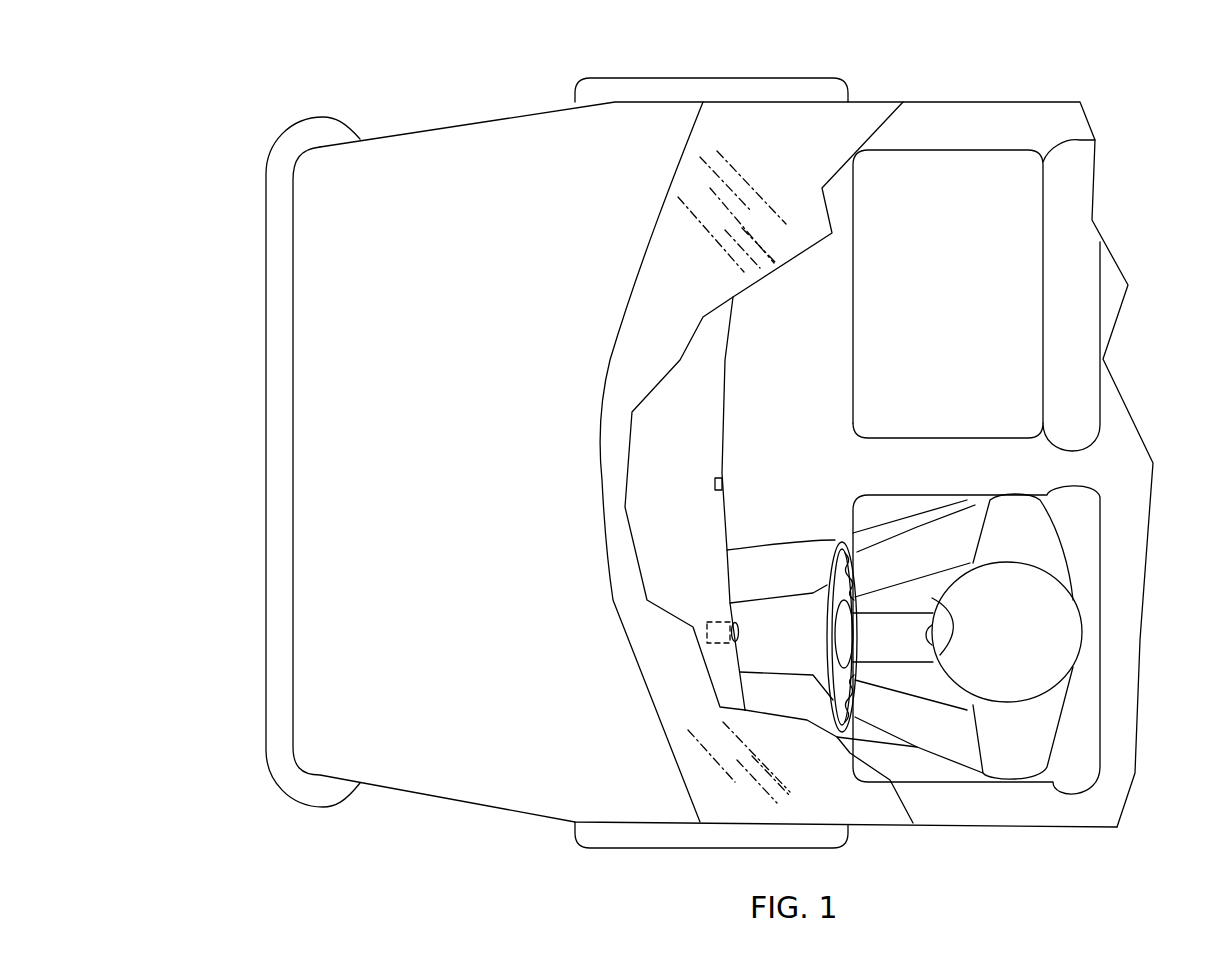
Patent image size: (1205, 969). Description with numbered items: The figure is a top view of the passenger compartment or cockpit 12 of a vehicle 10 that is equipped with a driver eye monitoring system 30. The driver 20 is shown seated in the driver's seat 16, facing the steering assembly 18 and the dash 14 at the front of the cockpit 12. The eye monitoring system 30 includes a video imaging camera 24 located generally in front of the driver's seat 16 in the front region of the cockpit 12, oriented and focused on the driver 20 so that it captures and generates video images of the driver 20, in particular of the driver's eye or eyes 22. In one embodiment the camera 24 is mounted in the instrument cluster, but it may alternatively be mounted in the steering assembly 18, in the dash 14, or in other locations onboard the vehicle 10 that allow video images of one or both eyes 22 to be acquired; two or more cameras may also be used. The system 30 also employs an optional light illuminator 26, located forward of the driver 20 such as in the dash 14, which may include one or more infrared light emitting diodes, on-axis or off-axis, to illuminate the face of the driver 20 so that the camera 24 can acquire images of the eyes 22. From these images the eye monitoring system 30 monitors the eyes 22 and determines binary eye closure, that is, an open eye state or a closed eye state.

The vehicle 10 is at (433, 100).
The passenger compartment 12 is at (826, 362).
The dash 14 is at (725, 408).
The driver's seat 16 is at (1103, 700).
The steering assembly 18 is at (832, 572).
The driver 20 is at (1055, 572).
The eye 22 is at (937, 655).
The video imaging camera 24 is at (727, 617).
The light illuminator 26 is at (720, 477).
The eye monitoring system 30 is at (708, 612).